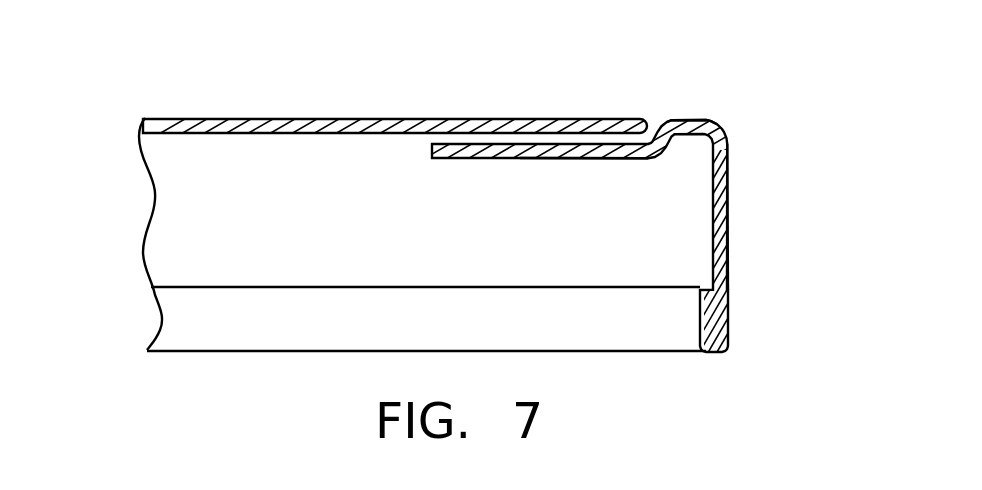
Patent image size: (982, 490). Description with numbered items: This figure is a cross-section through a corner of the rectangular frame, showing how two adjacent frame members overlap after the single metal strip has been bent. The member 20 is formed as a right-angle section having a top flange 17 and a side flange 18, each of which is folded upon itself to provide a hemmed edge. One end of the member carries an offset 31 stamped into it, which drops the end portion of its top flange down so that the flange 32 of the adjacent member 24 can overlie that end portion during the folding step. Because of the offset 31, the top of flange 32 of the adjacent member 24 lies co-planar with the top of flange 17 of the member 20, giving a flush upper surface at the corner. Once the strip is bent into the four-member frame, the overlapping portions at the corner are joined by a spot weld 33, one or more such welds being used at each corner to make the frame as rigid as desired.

The top flange 17 is at (692, 118).
The side flange 18 is at (728, 270).
The member 20 is at (634, 210).
The member 24 is at (118, 228).
The offset 31 is at (632, 160).
The flange 32 is at (197, 118).
The spot weld 33 is at (508, 120).